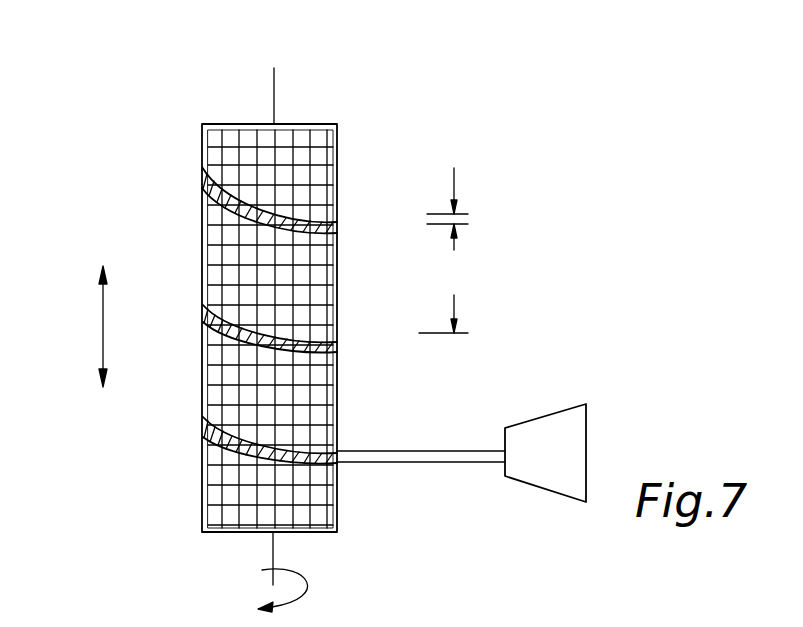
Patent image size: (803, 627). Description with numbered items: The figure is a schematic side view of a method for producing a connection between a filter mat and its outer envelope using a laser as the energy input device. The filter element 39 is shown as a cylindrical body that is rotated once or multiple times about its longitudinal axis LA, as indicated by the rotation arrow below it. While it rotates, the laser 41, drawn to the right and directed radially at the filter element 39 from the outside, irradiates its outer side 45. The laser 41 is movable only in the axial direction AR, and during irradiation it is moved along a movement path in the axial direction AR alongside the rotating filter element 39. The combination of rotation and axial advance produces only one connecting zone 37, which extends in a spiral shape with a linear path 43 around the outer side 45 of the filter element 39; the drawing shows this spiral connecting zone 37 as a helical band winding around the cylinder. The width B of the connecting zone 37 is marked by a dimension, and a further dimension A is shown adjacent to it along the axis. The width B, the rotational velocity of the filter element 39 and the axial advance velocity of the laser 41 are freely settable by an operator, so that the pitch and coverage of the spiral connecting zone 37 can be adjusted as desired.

The connecting zone 37 is at (337, 348).
The filter element 39 is at (392, 147).
The laser 41 is at (545, 417).
The linear path 43 is at (202, 347).
The outer side 45 is at (203, 163).
The longitudinal axis LA is at (274, 94).
The axial direction AR is at (84, 326).
The bead pitch A is at (443, 300).
The width of the connecting zone B is at (457, 209).